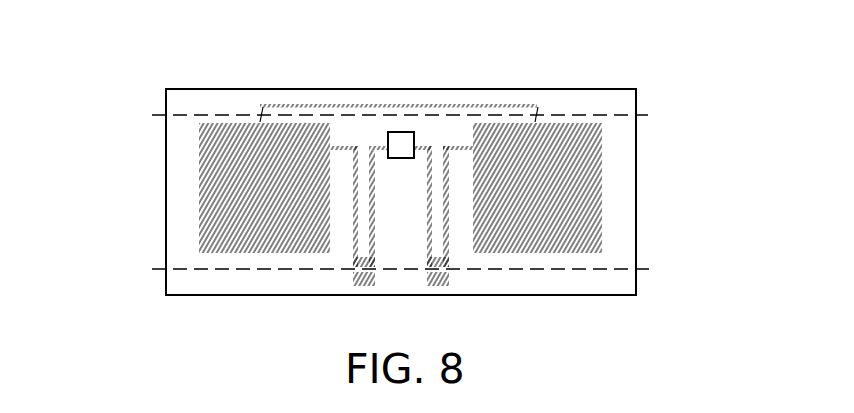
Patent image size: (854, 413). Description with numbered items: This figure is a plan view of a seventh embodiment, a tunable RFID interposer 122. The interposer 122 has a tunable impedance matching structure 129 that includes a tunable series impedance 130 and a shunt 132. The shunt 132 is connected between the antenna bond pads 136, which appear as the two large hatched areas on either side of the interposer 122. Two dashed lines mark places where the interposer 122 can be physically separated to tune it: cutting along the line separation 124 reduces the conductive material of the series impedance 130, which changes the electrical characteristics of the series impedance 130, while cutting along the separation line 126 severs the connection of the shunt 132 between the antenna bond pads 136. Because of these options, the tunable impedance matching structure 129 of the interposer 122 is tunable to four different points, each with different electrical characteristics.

The RFID interposer 122 is at (395, 180).
The line separation 124 is at (652, 267).
The separation line 126 is at (648, 114).
The tunable impedance matching structure 129 is at (285, 88).
The tunable series impedance 130 is at (352, 297).
The shunt 132 is at (415, 105).
The antenna bond pads 136 is at (202, 200).